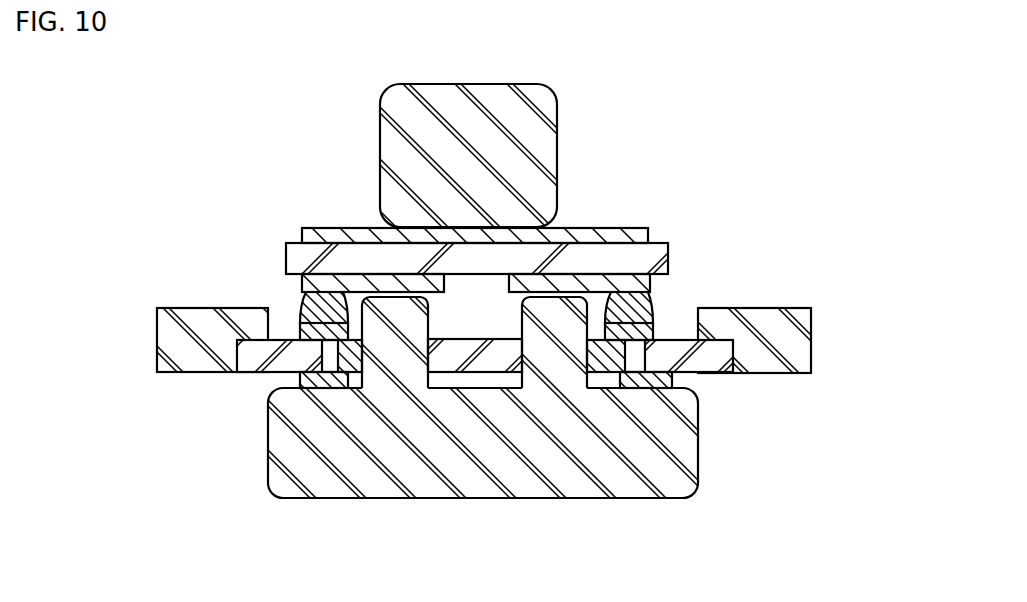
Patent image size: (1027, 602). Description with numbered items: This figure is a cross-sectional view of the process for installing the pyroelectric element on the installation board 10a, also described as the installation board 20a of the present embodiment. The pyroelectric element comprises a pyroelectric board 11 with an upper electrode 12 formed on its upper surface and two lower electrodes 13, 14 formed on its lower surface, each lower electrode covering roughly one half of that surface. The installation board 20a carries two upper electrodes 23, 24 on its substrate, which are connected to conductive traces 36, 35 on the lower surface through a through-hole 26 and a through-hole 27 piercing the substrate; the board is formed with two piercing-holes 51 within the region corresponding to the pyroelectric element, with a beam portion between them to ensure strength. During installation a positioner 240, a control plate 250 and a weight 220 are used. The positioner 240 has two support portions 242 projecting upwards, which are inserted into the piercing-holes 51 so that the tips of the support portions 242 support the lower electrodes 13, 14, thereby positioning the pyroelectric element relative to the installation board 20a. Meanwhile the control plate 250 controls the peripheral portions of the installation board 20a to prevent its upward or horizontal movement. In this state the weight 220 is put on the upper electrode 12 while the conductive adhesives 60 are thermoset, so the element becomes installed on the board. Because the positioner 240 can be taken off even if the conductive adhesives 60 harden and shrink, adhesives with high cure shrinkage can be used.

The installation board 10a is at (461, 301).
The pyroelectric board 11 is at (668, 263).
The upper electrode 12 is at (648, 233).
The lower electrode 13 is at (300, 288).
The lower electrode 14 is at (650, 286).
The installation board 20a is at (474, 375).
The upper electrode 23 is at (253, 336).
The upper electrode 24 is at (643, 329).
The through-hole 26 is at (318, 360).
The through-hole 27 is at (637, 358).
The conductive trace 35 is at (652, 390).
The conductive trace 36 is at (312, 383).
The piercing-hole 51 is at (371, 363).
The conductive adhesive 60 is at (330, 305).
The weight 220 is at (555, 138).
The positioner 240 is at (525, 301).
The support portion 242 is at (408, 357).
The control plate 250 is at (173, 310).